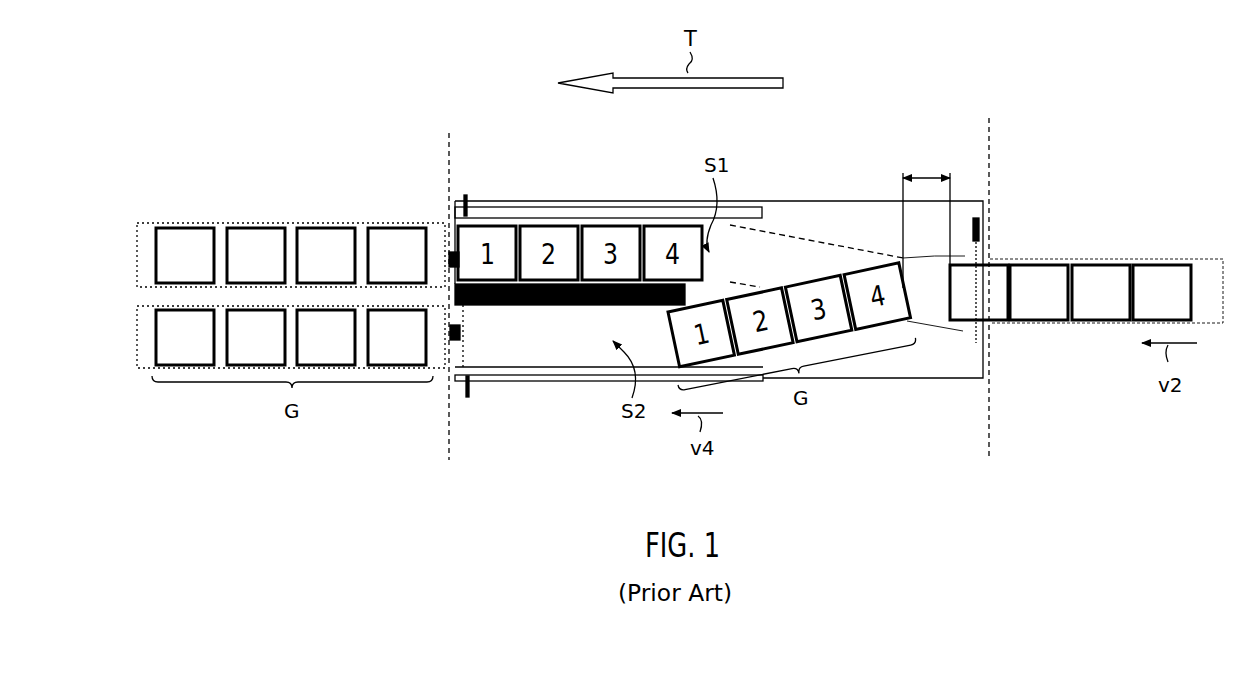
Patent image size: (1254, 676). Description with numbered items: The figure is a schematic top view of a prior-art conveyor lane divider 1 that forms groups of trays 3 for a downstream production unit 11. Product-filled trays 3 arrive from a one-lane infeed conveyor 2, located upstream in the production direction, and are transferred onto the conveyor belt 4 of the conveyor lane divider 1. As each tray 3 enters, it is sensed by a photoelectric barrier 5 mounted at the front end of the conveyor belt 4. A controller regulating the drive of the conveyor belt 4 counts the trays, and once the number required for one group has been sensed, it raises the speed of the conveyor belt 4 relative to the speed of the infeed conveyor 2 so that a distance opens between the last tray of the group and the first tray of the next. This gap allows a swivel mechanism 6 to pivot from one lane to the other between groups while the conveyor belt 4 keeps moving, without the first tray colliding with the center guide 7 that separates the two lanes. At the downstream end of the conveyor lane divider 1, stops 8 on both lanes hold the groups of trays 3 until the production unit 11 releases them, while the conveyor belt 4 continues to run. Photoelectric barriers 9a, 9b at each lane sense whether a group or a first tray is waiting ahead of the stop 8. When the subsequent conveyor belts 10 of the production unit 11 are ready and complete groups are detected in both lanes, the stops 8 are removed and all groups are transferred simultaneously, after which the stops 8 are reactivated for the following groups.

The conveyor lane divider 1 is at (891, 76).
The infeed conveyor 2 is at (1086, 268).
The tray 3 is at (1093, 272).
The conveyor belt 4 is at (870, 209).
The photoelectric barrier 5 is at (981, 232).
The swivel mechanism 6 is at (786, 236).
The center guide 7 is at (585, 306).
The stop 8 is at (449, 256).
The photoelectric barrier 9a is at (467, 196).
The photoelectric barrier 9b is at (469, 392).
The subsequent conveyor belt 10 is at (140, 237).
The production unit 11 is at (266, 240).